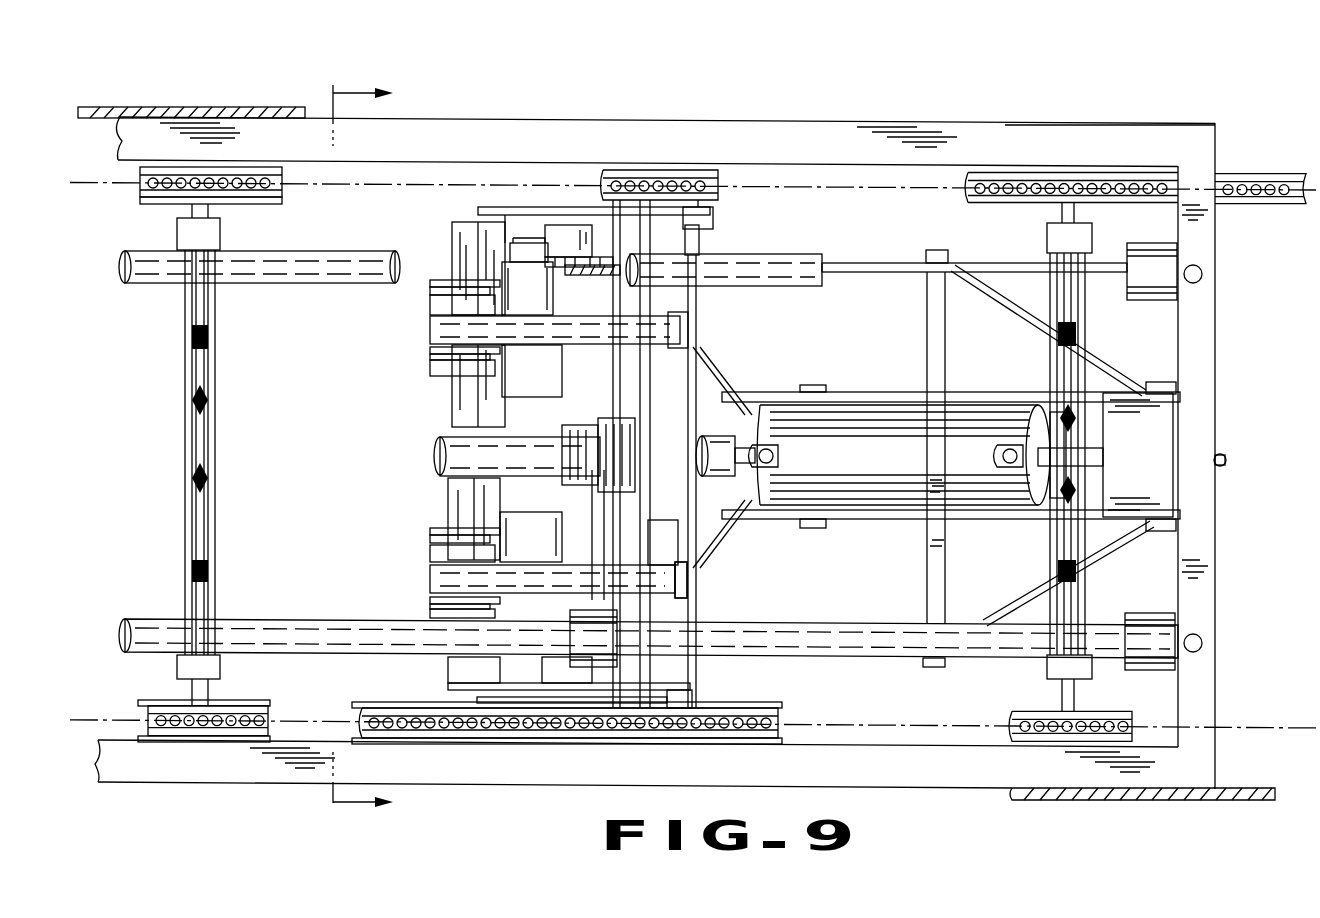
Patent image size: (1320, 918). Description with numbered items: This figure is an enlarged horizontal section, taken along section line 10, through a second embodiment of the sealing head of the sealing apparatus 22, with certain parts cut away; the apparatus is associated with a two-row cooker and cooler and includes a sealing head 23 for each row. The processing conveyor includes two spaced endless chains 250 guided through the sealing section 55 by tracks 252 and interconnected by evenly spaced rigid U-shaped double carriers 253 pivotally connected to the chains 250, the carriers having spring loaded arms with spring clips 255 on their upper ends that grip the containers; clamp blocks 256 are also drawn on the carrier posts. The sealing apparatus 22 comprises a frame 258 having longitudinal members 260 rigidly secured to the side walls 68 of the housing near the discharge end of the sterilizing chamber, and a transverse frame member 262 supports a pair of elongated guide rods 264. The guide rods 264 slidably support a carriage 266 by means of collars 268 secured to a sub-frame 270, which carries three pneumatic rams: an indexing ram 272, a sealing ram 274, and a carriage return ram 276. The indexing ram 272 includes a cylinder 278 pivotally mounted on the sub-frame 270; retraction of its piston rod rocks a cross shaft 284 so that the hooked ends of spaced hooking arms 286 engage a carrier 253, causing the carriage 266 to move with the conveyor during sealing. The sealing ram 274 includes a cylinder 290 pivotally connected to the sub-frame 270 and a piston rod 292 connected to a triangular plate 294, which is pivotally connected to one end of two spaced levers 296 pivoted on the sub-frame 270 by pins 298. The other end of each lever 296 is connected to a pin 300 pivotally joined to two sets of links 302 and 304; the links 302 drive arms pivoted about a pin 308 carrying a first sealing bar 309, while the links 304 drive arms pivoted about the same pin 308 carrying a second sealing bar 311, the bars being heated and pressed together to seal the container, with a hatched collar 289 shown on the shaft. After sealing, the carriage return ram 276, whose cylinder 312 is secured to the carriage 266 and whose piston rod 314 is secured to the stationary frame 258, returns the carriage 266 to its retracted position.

The section line 10 is at (363, 449).
The sealing apparatus 22 is at (328, 468).
The sealing head 23 is at (534, 470).
The sensor 55 is at (522, 160).
The side walls 68 is at (103, 107).
The endless chains 250 is at (172, 198).
The tracks 252 is at (600, 173).
The double carriers 253 is at (178, 312).
The spring clips 255 is at (196, 484).
The clamp block 256 is at (190, 340).
The frame 258 is at (1008, 122).
The longitudinal members 260 is at (824, 121).
The transverse frame members 262 is at (1200, 322).
The guide rods 264 is at (110, 266).
The carriage 266 is at (1160, 380).
The collars 268 is at (1158, 298).
The sub-frame 270 is at (862, 256).
The indexing ram 272 is at (420, 444).
The sealing ram 274 is at (952, 402).
The carriage return ram 276 is at (1050, 490).
The cylinder 278 is at (470, 426).
The cross shaft 284 is at (700, 604).
The hooking arms 286 is at (515, 703).
The collar 289 is at (545, 208).
The cylinder 290 is at (922, 451).
The piston rod 292 is at (756, 446).
The triangular plate 294 is at (702, 452).
The levers 296 is at (700, 328).
The pins 298 is at (522, 318).
The pin 300 is at (440, 284).
The links 302 is at (428, 292).
The links 304 is at (428, 308).
The pin 308 is at (525, 238).
The first sealing bar 309 is at (570, 226).
The second sealing bar 311 is at (452, 226).
The cylinder 312 is at (1090, 440).
The piston rod 314 is at (1228, 460).